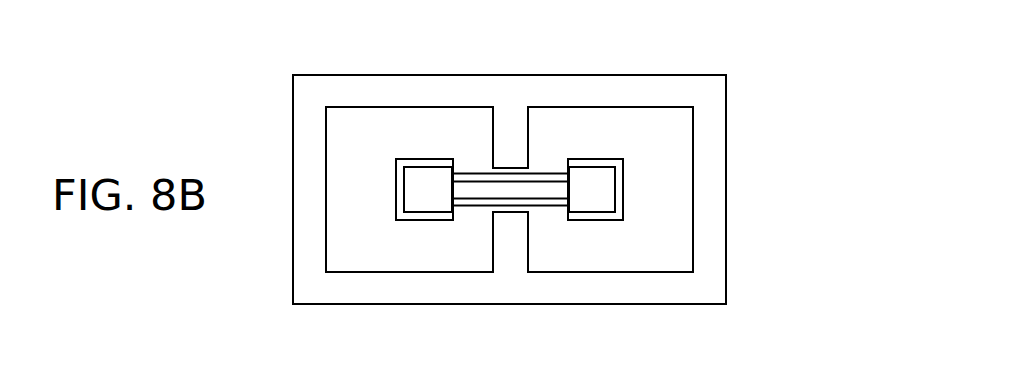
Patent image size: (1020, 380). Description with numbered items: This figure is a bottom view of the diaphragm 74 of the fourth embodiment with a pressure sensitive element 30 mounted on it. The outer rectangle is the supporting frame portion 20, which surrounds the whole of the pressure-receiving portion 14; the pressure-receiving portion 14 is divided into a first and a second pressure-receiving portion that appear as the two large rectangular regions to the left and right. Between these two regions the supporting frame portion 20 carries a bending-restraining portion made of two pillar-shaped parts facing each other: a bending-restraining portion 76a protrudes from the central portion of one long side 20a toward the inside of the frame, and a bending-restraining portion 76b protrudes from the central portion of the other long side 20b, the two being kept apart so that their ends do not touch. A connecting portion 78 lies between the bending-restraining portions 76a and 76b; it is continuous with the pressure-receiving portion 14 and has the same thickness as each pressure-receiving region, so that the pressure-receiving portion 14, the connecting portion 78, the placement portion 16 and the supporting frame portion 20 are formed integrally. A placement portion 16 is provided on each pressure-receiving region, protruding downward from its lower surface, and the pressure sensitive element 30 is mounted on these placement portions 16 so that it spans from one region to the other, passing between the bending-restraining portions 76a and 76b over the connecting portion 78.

The pressure-receiving portion 14 is at (340, 245).
The placement portion 16 is at (405, 159).
The supporting frame portion 20 is at (713, 172).
The long side 20a is at (372, 285).
The long side 20b is at (422, 93).
The pressure sensitive element 30 is at (547, 205).
The diaphragm 74 is at (684, 75).
The bending-restraining portion 76a is at (528, 248).
The bending-restraining portion 76b is at (528, 145).
The connecting portion 78 is at (510, 208).